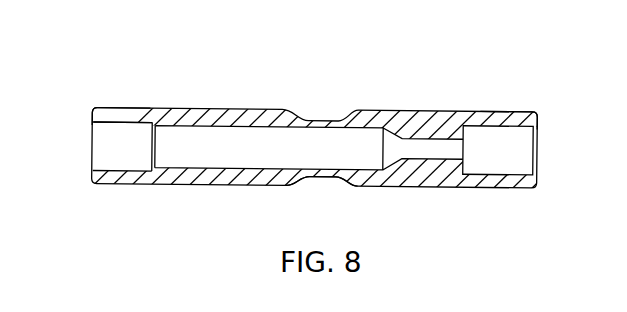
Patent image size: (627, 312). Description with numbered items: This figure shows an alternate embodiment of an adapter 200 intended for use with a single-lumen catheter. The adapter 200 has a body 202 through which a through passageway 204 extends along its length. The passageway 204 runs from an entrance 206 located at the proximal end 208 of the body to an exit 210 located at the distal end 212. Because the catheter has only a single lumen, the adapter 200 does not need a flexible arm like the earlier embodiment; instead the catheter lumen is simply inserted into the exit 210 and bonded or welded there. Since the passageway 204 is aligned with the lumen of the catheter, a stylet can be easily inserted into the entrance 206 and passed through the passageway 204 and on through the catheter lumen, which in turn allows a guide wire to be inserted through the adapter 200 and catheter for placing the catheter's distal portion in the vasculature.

The adapter 200 is at (308, 106).
The body 202 is at (291, 192).
The through passageway 204 is at (108, 157).
The entrance 206 is at (91, 125).
The proximal end 208 is at (122, 100).
The exit 210 is at (538, 163).
The distal end 212 is at (539, 103).